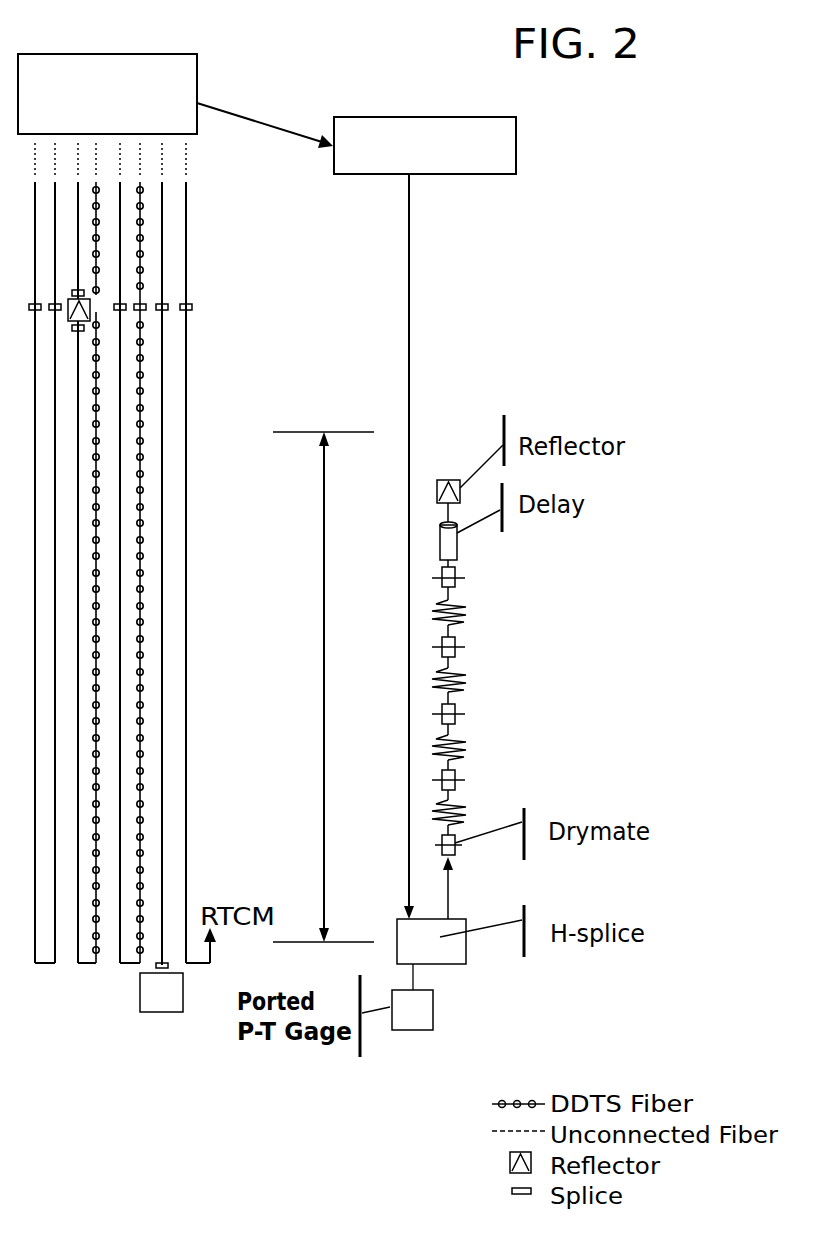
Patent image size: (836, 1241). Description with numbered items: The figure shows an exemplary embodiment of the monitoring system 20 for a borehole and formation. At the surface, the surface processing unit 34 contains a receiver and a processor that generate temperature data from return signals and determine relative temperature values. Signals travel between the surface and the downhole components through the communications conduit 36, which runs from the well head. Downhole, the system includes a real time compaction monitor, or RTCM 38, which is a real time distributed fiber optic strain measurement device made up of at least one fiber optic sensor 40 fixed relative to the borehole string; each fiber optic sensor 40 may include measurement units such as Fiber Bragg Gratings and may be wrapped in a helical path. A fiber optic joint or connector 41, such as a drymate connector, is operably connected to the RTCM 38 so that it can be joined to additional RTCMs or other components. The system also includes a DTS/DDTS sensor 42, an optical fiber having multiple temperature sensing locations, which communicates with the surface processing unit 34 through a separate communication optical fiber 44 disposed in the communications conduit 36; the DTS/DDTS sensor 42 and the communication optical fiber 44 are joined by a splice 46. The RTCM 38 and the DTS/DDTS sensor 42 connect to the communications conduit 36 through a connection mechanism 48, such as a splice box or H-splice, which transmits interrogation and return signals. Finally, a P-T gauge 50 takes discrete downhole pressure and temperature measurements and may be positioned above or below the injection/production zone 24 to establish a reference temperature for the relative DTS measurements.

The monitoring system 20 is at (443, 199).
The injection/production zone 24 is at (322, 625).
The surface processing unit 34 is at (197, 60).
The communications conduit 36 is at (410, 306).
The real time compaction monitor (RTCM) 38 is at (488, 615).
The fiber optic sensor 40 is at (462, 808).
The fiber optic joint or connector 41 is at (455, 576).
The DTS/DDTS sensor 42 is at (143, 433).
The communication optical fiber 44 is at (121, 392).
The splice 46 is at (128, 963).
The connection mechanism 48 is at (466, 957).
The P-T gauge 50 is at (286, 997).